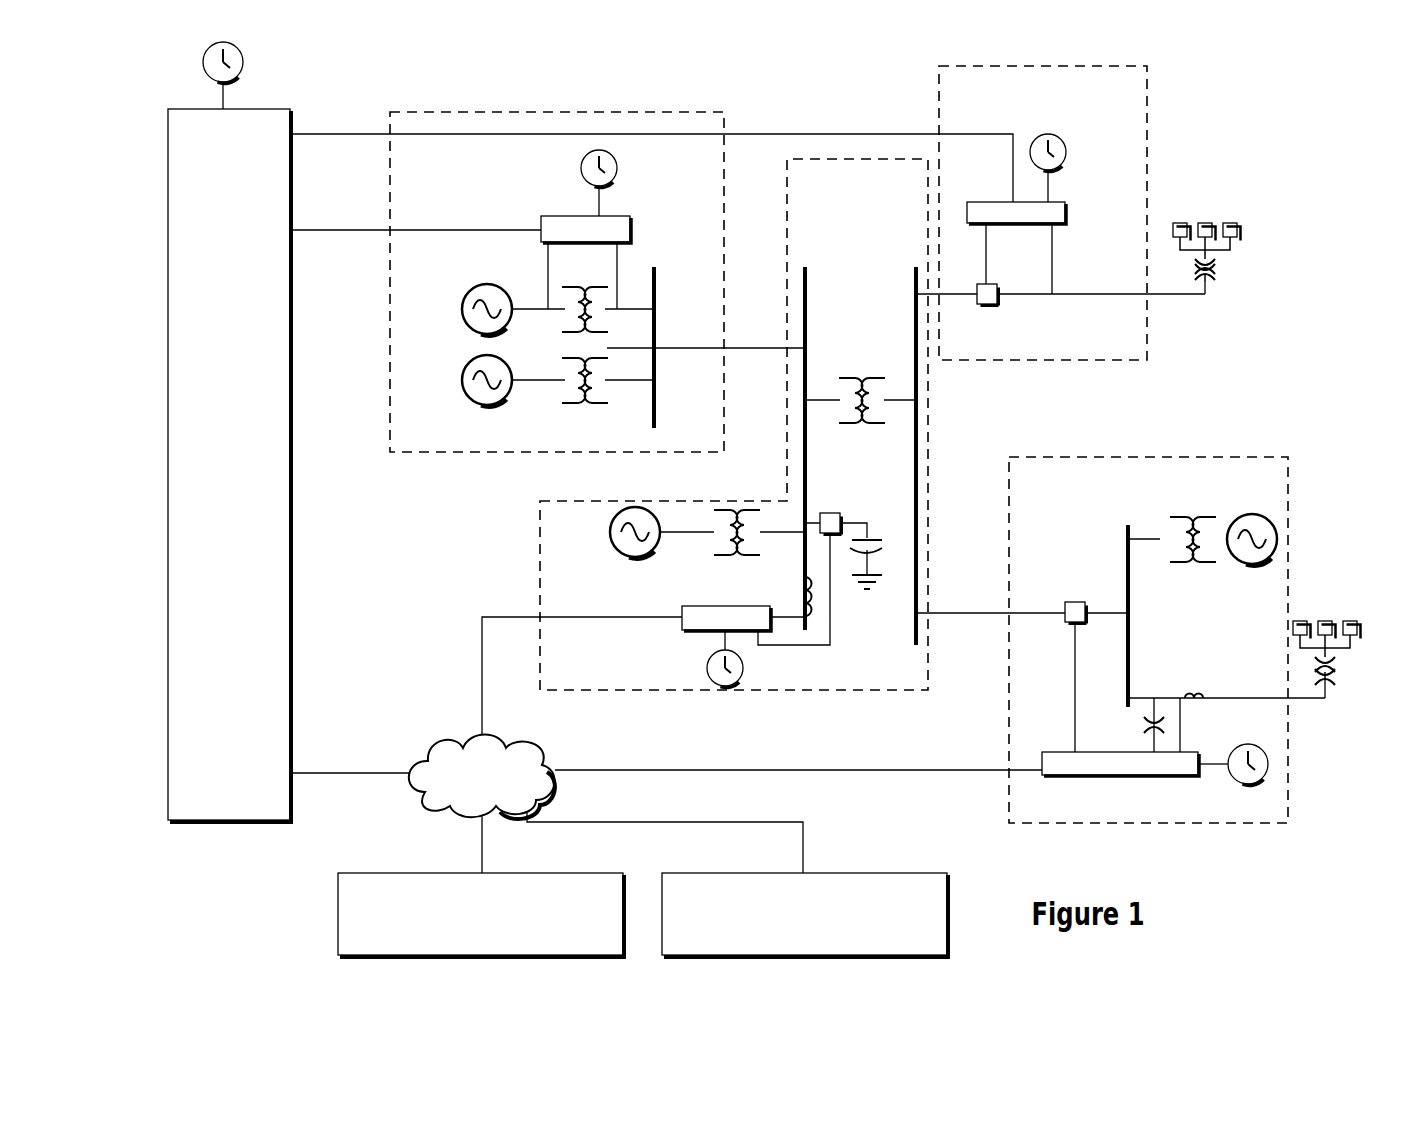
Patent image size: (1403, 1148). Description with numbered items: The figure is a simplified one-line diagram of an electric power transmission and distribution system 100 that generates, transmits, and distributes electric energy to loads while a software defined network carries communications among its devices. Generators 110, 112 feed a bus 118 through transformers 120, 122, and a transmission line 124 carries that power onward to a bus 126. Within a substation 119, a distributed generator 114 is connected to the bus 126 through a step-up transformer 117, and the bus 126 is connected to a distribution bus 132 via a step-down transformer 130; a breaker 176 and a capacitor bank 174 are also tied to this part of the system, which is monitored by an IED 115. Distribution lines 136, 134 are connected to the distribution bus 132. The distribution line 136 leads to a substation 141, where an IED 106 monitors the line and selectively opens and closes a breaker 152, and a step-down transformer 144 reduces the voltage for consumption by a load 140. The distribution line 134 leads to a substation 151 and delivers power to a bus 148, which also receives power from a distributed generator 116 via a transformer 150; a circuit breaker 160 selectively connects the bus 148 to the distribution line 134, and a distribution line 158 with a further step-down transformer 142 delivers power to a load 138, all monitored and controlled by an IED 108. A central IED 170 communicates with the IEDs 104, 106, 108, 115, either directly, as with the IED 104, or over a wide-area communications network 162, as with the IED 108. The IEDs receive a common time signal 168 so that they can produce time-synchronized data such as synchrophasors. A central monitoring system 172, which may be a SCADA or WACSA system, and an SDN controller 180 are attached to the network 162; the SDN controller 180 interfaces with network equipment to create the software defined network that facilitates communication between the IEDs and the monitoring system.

The electric power transmission and distribution system 100 is at (1272, 132).
The IED 104 is at (553, 216).
The IED 106 is at (977, 202).
The IED 108 is at (1170, 776).
The generator 110 is at (462, 309).
The generator 112 is at (462, 380).
The generator 114 is at (610, 532).
The IED 115 is at (754, 606).
The distributed generator 116 is at (1240, 562).
The step-up transformer 117 is at (714, 546).
The bus 118 is at (657, 408).
The substation 119 is at (663, 691).
The transformer 120 is at (563, 326).
The transformer 122 is at (588, 404).
The transmission line 124 is at (740, 350).
The bus 126 is at (808, 426).
The step-down transformer 130 is at (863, 378).
The distribution bus 132 is at (913, 604).
The distribution line 134 is at (1022, 614).
The distribution line 136 is at (958, 296).
The load 138 is at (1326, 620).
The load 140 is at (1242, 226).
The substation 141 is at (1122, 361).
The step-down transformer 142 is at (1336, 680).
The step-down transformer 144 is at (1218, 272).
The bus 148 is at (1126, 528).
The transformer 150 is at (1190, 518).
The substation 151 is at (1221, 824).
The breaker 152 is at (1000, 304).
The distribution line 158 is at (1218, 694).
The circuit breaker 160 is at (1071, 602).
The communications network 162 is at (482, 777).
The common time signal 168 is at (243, 62).
The central IED 170 is at (229, 465).
The central monitoring system 172 is at (481, 915).
The capacitor bank 174 is at (878, 538).
The breaker 176 is at (835, 513).
The SDN controller 180 is at (805, 915).